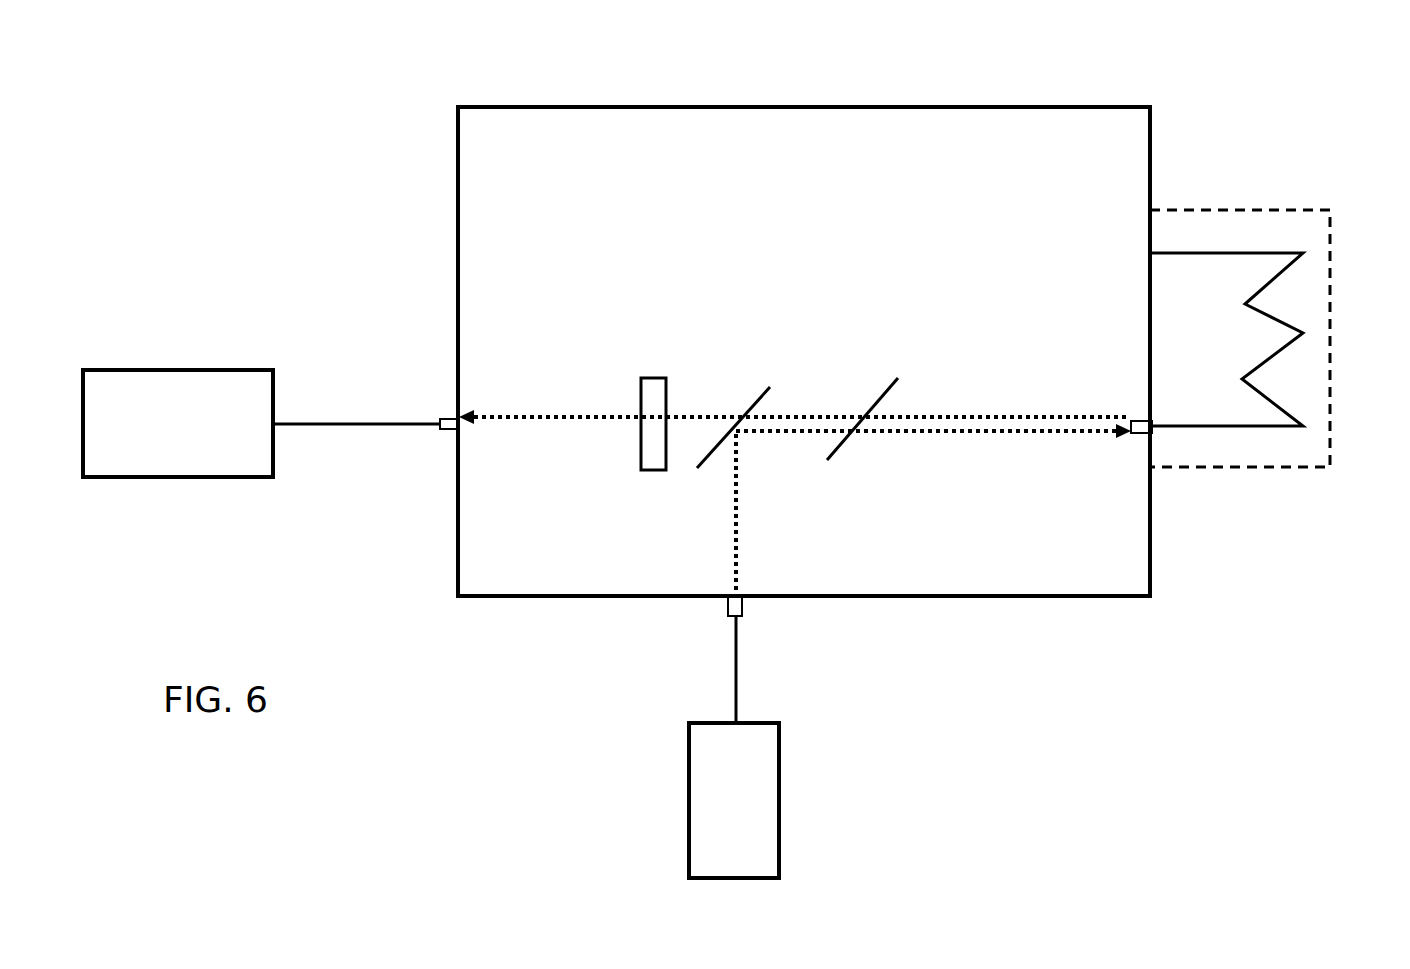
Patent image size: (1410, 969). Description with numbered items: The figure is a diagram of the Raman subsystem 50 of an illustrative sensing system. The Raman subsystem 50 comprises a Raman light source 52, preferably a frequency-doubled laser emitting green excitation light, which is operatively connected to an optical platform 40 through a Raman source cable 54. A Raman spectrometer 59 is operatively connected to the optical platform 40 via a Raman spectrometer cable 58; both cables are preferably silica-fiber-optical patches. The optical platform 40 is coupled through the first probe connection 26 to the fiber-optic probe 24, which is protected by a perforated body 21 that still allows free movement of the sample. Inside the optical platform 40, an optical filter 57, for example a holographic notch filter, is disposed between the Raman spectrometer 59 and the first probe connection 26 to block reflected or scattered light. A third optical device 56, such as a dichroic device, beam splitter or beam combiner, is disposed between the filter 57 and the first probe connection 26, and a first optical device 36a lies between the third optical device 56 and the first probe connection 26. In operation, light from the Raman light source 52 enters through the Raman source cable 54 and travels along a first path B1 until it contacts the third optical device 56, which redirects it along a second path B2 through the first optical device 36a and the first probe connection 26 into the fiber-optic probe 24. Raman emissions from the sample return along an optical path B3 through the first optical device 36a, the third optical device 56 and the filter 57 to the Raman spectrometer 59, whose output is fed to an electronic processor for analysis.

The optical platform 40 is at (780, 107).
The perforated body 21 is at (1330, 212).
The fiber-optic probe 24 is at (1303, 333).
The first probe connection 26 is at (1140, 436).
The Raman spectrometer cable 58 is at (340, 423).
The Raman spectrometer 59 is at (178, 423).
The optical filter 57 is at (641, 468).
The third optical device 56 is at (755, 398).
The first optical device 36a is at (875, 398).
The first path B1 is at (736, 522).
The second path B2 is at (908, 432).
The optical path B3 is at (973, 417).
The Raman source cable 54 is at (736, 660).
The Raman light source 52 is at (734, 800).
The Raman subsystem 50 is at (872, 703).